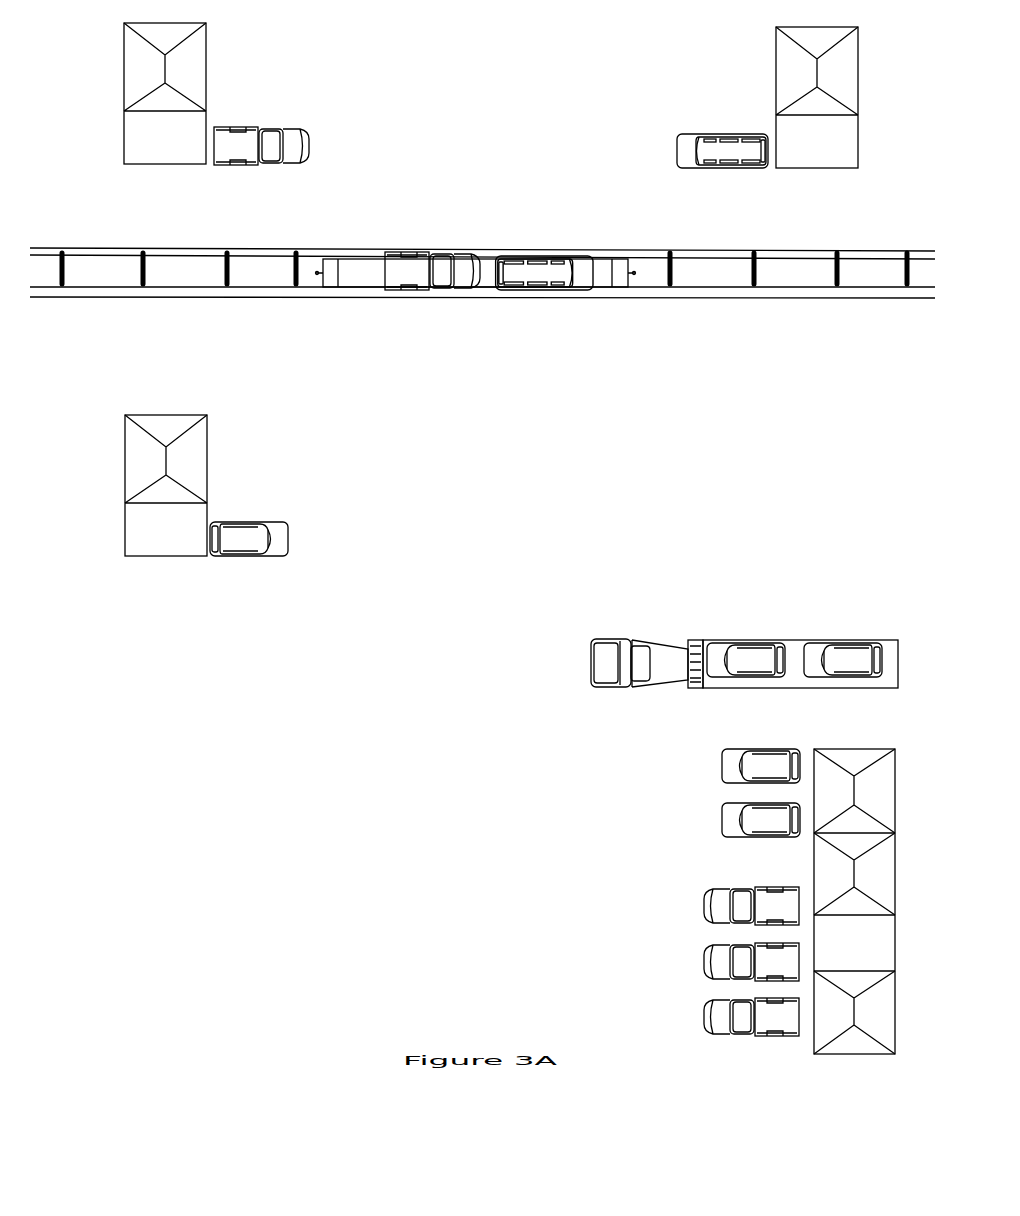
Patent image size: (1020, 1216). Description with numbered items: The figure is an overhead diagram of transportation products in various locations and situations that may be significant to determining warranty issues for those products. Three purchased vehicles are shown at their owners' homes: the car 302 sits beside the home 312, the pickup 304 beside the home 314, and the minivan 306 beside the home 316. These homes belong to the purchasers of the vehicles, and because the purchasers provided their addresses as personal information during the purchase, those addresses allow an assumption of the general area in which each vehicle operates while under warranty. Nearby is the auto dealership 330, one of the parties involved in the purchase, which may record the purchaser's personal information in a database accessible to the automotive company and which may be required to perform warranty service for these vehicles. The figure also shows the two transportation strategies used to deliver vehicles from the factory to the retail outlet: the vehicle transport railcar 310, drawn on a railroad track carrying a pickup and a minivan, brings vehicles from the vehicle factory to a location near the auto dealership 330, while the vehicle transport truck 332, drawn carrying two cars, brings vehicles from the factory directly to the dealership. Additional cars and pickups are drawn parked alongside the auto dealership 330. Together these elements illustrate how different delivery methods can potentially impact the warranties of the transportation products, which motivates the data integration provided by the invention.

The vehicle 302 is at (240, 589).
The vehicle 304 is at (240, 199).
The vehicle 306 is at (723, 203).
The vehicle transport railcar 310 is at (466, 349).
The home 312 is at (157, 540).
The home 314 is at (156, 151).
The home 316 is at (808, 155).
The auto dealership 330 is at (845, 967).
The vehicle transport truck 332 is at (751, 742).